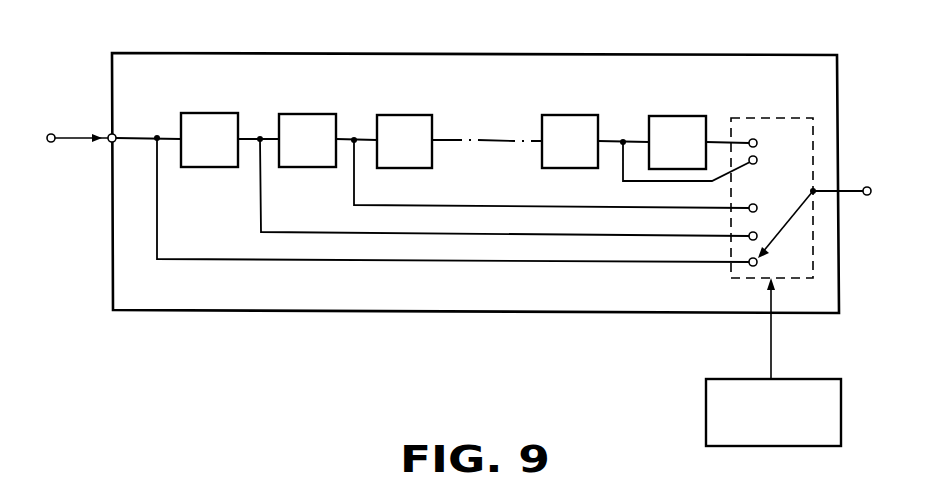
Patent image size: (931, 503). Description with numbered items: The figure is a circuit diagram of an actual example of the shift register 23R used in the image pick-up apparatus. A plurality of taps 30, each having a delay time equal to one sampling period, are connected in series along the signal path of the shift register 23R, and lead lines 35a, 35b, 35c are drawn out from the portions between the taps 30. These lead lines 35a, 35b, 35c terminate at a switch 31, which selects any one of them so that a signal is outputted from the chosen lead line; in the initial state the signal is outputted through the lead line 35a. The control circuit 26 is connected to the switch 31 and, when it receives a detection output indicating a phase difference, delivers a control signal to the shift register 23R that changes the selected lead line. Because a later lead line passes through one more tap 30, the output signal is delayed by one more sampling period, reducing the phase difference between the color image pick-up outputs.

The shift register 23R is at (483, 54).
The tap 30 is at (189, 113).
The selector switch 31 is at (745, 118).
The lead line 35a is at (487, 263).
The lead line 35b is at (508, 235).
The lead line 35c is at (535, 207).
The control circuit 26 is at (706, 397).